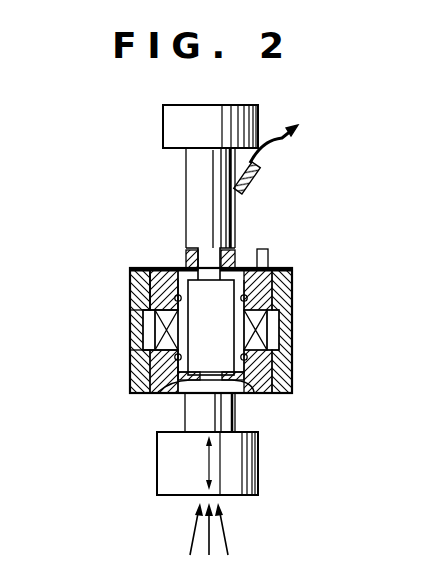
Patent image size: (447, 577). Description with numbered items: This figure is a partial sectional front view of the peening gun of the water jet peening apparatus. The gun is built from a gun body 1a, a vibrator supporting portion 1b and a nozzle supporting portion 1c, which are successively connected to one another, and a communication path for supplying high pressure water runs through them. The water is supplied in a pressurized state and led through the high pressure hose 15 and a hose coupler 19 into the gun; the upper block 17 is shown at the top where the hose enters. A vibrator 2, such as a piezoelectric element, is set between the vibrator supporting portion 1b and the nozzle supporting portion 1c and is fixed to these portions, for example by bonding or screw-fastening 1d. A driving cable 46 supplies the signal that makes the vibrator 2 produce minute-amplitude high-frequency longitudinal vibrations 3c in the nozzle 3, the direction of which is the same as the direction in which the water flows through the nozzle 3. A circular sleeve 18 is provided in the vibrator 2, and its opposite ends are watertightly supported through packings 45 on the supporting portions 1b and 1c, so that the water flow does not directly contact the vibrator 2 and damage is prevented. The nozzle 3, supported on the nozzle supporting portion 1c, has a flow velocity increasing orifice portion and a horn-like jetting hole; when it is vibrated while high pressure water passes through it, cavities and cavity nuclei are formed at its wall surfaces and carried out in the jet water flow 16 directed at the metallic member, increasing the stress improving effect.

The upper block 17 is at (178, 128).
The high pressure hose 15 is at (288, 130).
The hose coupler 19 is at (256, 178).
The driving cable 46 is at (262, 250).
The gun body 1a is at (187, 254).
The vibrator supporting portion 1b is at (161, 268).
The screw-fastening 1d is at (151, 276).
The packings 45 is at (137, 293).
The sleeve 18 is at (166, 330).
The vibrator 2 is at (263, 333).
The nozzle supporting portion 1c is at (142, 368).
The longitudinal vibrations 3c is at (202, 461).
The nozzle 3 is at (260, 462).
The jet water flow 16 is at (196, 520).